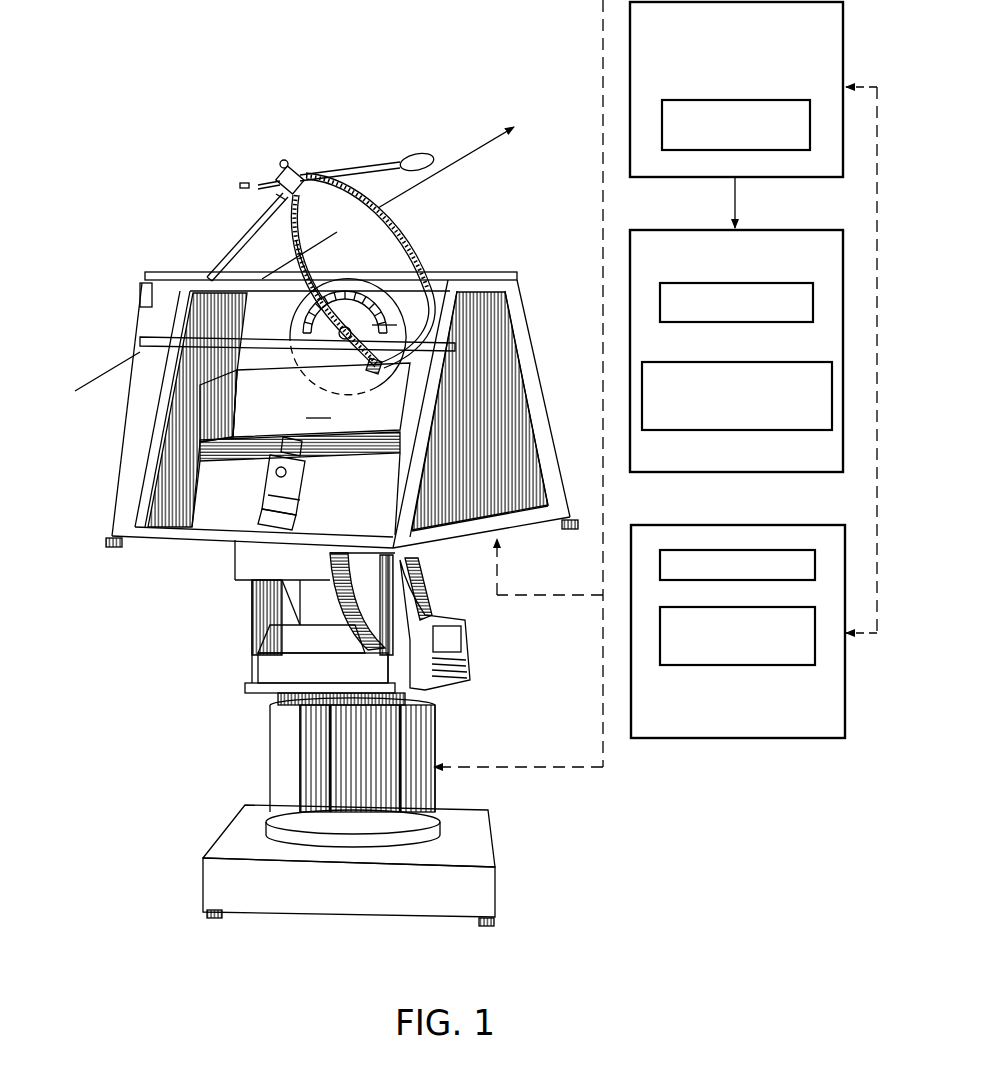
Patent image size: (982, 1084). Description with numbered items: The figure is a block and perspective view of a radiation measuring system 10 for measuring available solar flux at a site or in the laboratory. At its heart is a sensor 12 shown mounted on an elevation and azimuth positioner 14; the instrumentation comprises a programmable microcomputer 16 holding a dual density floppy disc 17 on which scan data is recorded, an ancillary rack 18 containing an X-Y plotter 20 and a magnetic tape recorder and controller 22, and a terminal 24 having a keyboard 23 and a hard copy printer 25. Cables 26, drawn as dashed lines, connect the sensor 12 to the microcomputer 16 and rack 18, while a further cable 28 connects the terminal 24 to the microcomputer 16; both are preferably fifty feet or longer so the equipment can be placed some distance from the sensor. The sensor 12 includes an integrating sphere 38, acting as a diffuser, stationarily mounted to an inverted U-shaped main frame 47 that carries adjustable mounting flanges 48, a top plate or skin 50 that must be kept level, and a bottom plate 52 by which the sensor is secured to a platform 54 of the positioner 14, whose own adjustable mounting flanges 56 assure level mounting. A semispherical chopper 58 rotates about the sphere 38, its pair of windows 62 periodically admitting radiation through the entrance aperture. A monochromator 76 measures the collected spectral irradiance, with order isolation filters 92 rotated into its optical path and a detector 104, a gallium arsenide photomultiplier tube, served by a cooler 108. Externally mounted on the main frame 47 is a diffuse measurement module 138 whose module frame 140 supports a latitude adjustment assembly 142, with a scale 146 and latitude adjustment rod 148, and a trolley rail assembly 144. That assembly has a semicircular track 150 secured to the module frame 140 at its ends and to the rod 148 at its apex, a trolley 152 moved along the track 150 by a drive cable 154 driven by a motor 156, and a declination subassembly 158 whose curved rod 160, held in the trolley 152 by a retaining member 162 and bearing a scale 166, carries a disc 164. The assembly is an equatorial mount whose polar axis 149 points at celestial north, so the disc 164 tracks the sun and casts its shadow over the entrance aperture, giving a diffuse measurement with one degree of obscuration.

The radiation measuring system 10 is at (342, 932).
The sensor 12 is at (113, 463).
The elevation and azimuth positioner 14 is at (232, 736).
The programmable microcomputer 16 is at (843, 66).
The dual density floppy disc 17 is at (748, 101).
The ancillary rack 18 is at (819, 230).
The X-Y plotter 20 is at (785, 283).
The magnetic tape recorder and controller 22 is at (765, 430).
The keyboard 23 is at (752, 550).
The terminal 24 is at (846, 698).
The hard copy printer 25 is at (808, 667).
The cables 26 is at (735, 201).
The cable 28 is at (878, 632).
The integrating sphere 38 is at (318, 356).
The main frame 47 is at (533, 338).
The adjustable mounting flanges 48 is at (110, 548).
The top plate or skin 50 is at (478, 272).
The bottom plate 52 is at (206, 548).
The platform 54 is at (236, 579).
The adjustable mounting flanges 56 is at (212, 916).
The semispherical chopper 58 is at (348, 337).
The windows 62 is at (358, 291).
The monochromator 76 is at (305, 412).
The order isolation filters 92 is at (288, 438).
The detector 104 is at (268, 480).
The cooler 108 is at (294, 512).
The diffuse measurement module 138 is at (326, 151).
The module frame 140 is at (142, 322).
The latitude adjustment assembly 142 is at (238, 251).
The trolley rail assembly 144 is at (397, 226).
The scale 146 is at (303, 318).
The latitude adjustment rod 148 is at (212, 271).
The polar axis 149 is at (472, 155).
The semicircular track 150 is at (300, 225).
The trolley 152 is at (279, 199).
The drive cable 154 is at (301, 246).
The motor 156 is at (398, 348).
The declination subassembly 158 is at (238, 185).
The rod 160 is at (270, 180).
The retaining member 162 is at (283, 161).
The disc 164 is at (427, 155).
The scale 166 is at (358, 168).